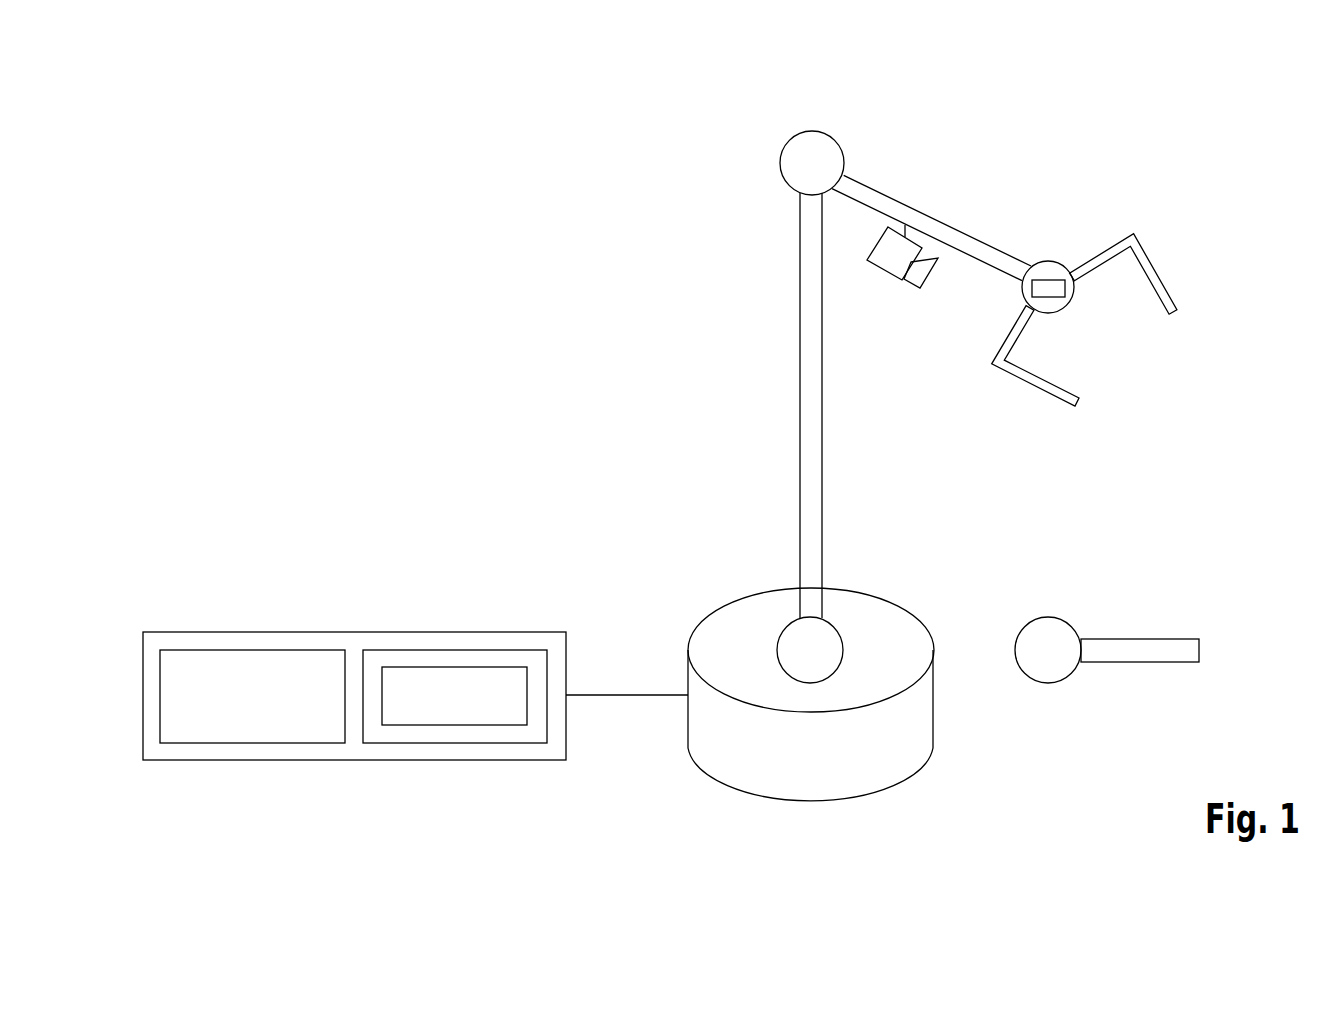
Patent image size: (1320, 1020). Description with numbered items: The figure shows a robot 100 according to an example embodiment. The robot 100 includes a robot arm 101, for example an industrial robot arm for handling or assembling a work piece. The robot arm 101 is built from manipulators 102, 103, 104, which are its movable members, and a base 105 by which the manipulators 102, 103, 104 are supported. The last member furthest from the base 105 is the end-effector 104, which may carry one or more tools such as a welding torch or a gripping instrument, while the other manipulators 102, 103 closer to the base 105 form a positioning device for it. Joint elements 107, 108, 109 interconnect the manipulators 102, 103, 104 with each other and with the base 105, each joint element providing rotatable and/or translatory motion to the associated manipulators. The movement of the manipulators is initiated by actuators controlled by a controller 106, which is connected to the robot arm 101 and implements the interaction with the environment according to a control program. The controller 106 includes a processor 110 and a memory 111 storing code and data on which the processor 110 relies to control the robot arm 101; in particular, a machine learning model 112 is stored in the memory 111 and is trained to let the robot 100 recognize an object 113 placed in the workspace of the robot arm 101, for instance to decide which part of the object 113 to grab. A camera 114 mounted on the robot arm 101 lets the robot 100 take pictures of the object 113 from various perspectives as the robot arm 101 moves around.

The robot 100 is at (973, 213).
The robot arm 101 is at (775, 348).
The manipulator 102 is at (805, 443).
The manipulator 103 is at (937, 226).
The end-effector 104 is at (1157, 278).
The base 105 is at (920, 710).
The controller 106 is at (355, 632).
The joint element 107 is at (793, 637).
The joint element 108 is at (780, 166).
The joint element 109 is at (1040, 272).
The processor 110 is at (275, 650).
The memory 111 is at (440, 650).
The machine learning model 112 is at (487, 667).
The object 113 is at (1057, 274).
The camera 114 is at (888, 270).